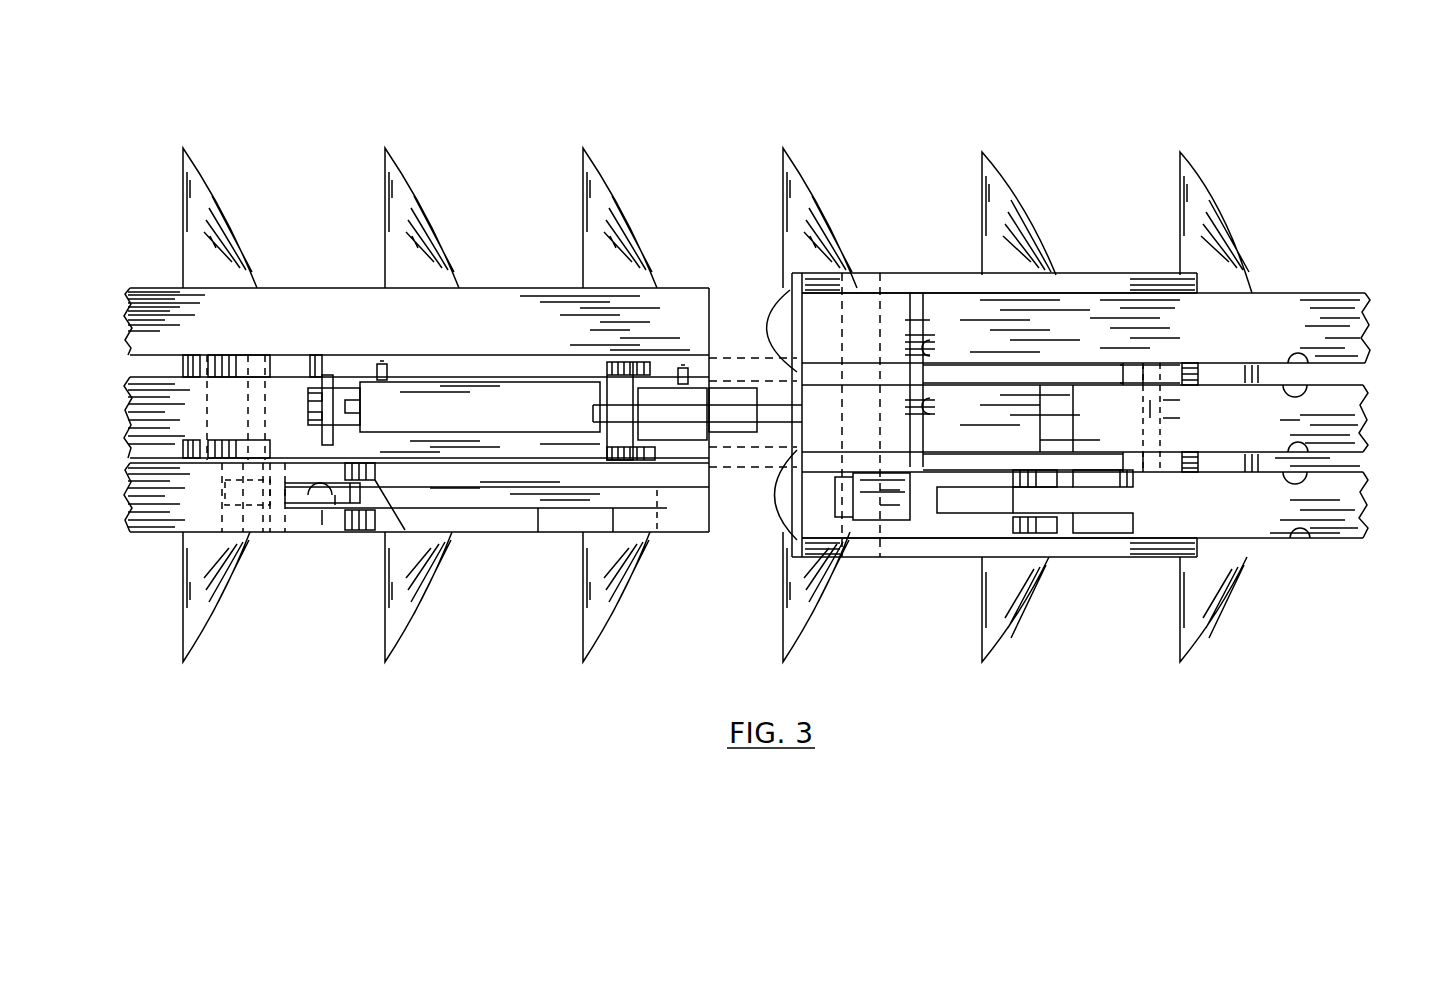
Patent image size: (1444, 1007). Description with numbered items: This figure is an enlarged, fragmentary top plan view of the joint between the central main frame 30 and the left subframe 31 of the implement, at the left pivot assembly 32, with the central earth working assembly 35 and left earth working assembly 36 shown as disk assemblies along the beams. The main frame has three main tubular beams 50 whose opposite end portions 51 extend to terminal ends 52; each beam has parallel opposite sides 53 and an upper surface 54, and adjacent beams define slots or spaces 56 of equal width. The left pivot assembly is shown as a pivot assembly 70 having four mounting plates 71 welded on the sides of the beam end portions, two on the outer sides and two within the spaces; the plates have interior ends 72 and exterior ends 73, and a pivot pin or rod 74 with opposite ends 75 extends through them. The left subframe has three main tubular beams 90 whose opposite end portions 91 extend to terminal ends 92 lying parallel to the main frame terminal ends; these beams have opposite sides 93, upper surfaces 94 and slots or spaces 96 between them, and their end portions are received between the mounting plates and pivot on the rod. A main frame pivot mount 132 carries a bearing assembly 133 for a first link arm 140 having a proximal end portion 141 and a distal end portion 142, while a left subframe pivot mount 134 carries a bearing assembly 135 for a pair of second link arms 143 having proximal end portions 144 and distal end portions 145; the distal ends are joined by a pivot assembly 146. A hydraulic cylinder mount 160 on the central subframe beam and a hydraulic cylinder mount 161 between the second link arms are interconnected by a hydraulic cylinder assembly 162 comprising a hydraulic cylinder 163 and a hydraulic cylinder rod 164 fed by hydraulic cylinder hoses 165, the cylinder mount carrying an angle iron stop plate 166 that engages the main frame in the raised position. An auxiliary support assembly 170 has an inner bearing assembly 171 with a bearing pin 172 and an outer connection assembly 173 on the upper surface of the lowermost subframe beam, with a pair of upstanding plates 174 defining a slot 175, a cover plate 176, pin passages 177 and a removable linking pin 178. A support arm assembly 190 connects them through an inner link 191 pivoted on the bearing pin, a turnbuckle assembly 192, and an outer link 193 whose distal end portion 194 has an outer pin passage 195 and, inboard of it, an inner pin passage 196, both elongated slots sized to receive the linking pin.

The central main frame 30 is at (1315, 264).
The left subframe 31 is at (292, 214).
The left pivot assembly 32 is at (861, 133).
The central earth working assembly 35 is at (1200, 200).
The left earth working assembly 36 is at (192, 185).
The main tubular beams 50 is at (1372, 318).
The opposite end portions 51 is at (1075, 305).
The terminal ends 52 is at (932, 340).
The parallel opposite sides 53 is at (1268, 292).
The upper surface 54 is at (1285, 329).
The slots or spaces 56 is at (1330, 363).
The pivot assembly 70 is at (875, 254).
The mounting plates 71 is at (1060, 290).
The interior ends 72 is at (1200, 285).
The exterior ends 73 is at (750, 547).
The pivot pin or rod 74 is at (890, 295).
The opposite ends 75 is at (868, 275).
The main tubular beams 90 is at (160, 300).
The opposite end portions 91 is at (840, 290).
The terminal ends 92 is at (922, 300).
The opposite sides 93 is at (500, 288).
The upper surfaces 94 is at (246, 321).
The slots or spaces 96 is at (165, 355).
The main frame pivot mount 132 is at (1172, 368).
The bearing assembly 133 is at (1195, 395).
The left subframe pivot mount 134 is at (285, 385).
The bearing assembly 135 is at (250, 400).
The first link arm 140 is at (1043, 395).
The proximal end portion 141 is at (1120, 418).
The distal end portion 142 is at (668, 400).
The second link arms 143 is at (555, 450).
The proximal end portions 144 is at (230, 450).
The distal end portions 145 is at (610, 395).
The pivot assembly 146 is at (612, 458).
The hydraulic cylinder mount 160 is at (775, 430).
The hydraulic cylinder mount 161 is at (332, 380).
The hydraulic cylinder assembly 162 is at (460, 382).
The hydraulic cylinder 163 is at (478, 410).
The hydraulic cylinder rod 164 is at (362, 410).
The hydraulic cylinder hoses 165 is at (384, 364).
The angle iron stop plate 166 is at (783, 387).
The auxiliary support assembly 170 is at (502, 514).
The inner bearing assembly 171 is at (1095, 545).
The bearing pin 172 is at (1032, 535).
The outer connection assembly 173 is at (325, 525).
The upstanding plates 174 is at (375, 518).
The slot 175 is at (310, 500).
The cover plate 176 is at (245, 525).
The pin passages 177 is at (235, 471).
The linking pin 178 is at (232, 555).
The support arm assembly 190 is at (613, 532).
The inner link 191 is at (975, 520).
The turnbuckle assembly 192 is at (867, 510).
The outer link 193 is at (534, 534).
The distal end portion 194 is at (345, 505).
The outer pin passage 195 is at (280, 470).
The inner pin passage 196 is at (660, 532).